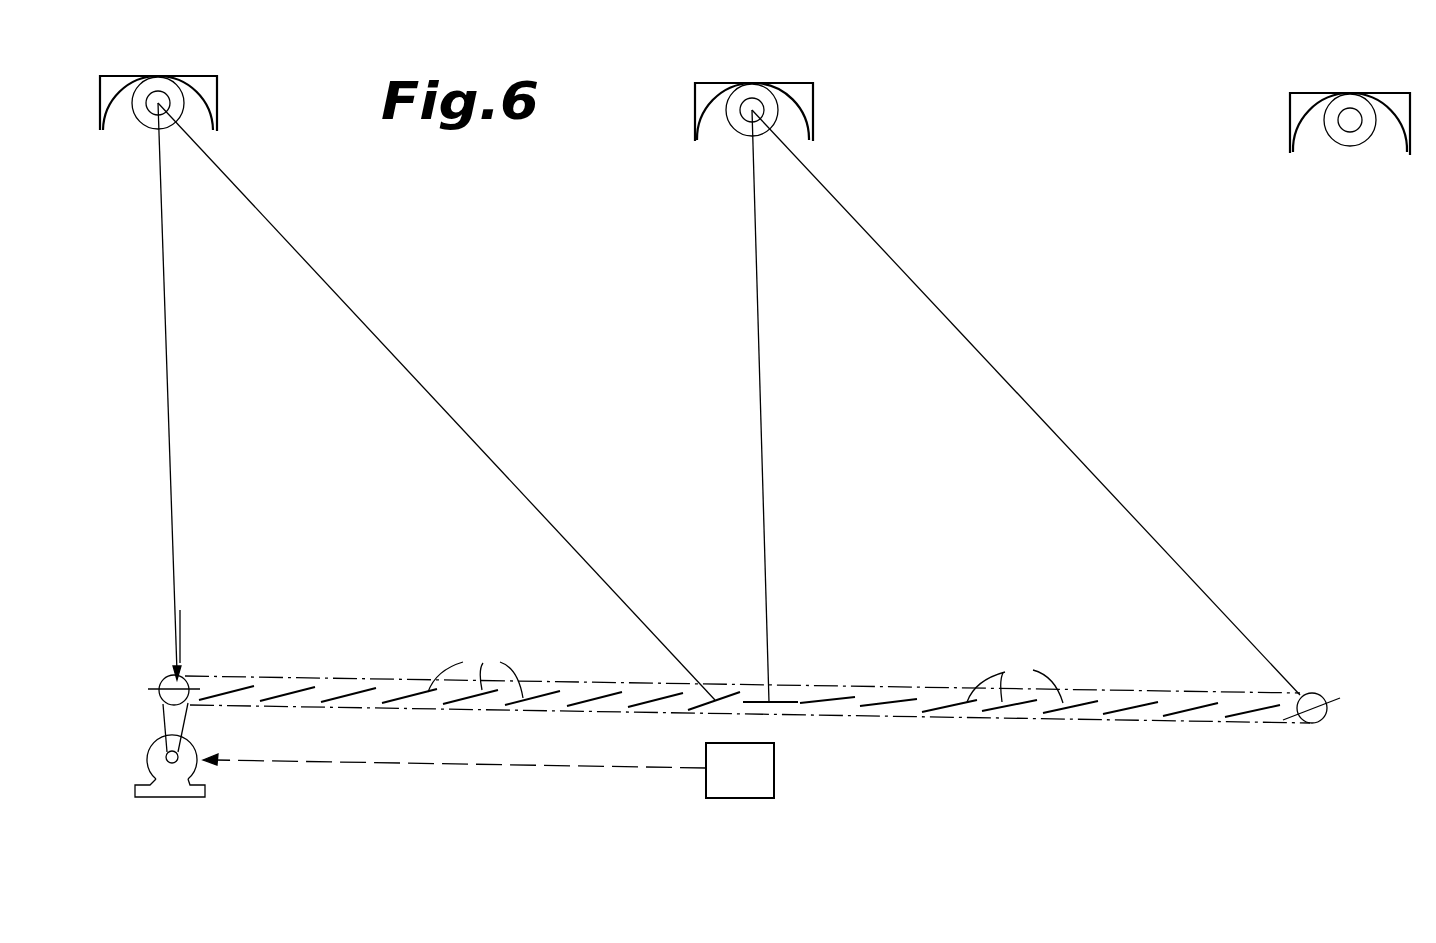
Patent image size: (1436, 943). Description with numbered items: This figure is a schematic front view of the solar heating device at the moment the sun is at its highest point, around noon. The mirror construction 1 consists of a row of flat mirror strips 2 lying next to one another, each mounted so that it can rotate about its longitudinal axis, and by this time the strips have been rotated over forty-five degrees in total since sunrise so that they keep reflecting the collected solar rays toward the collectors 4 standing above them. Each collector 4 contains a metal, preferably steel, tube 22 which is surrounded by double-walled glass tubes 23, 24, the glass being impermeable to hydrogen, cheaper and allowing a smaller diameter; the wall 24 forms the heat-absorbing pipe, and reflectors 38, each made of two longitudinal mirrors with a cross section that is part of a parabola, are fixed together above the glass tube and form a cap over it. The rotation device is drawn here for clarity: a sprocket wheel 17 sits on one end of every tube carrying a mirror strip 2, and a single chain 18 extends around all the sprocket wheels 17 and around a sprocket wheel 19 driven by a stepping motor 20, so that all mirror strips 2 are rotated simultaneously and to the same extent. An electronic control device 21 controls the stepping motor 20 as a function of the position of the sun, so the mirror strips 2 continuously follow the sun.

The mirror construction 1 is at (715, 651).
The mirror strip 2 is at (745, 666).
The collector 4 is at (238, 73).
The sprocket wheel 17 is at (166, 676).
The chain 18 is at (160, 716).
The sprocket wheel 19 is at (180, 752).
The stepping motor 20 is at (192, 782).
The electronic control device 21 is at (746, 790).
The steel tube 22 is at (158, 92).
The glass tube 23 is at (754, 136).
The glass tube wall 24 is at (165, 130).
The reflector 38 is at (214, 101).